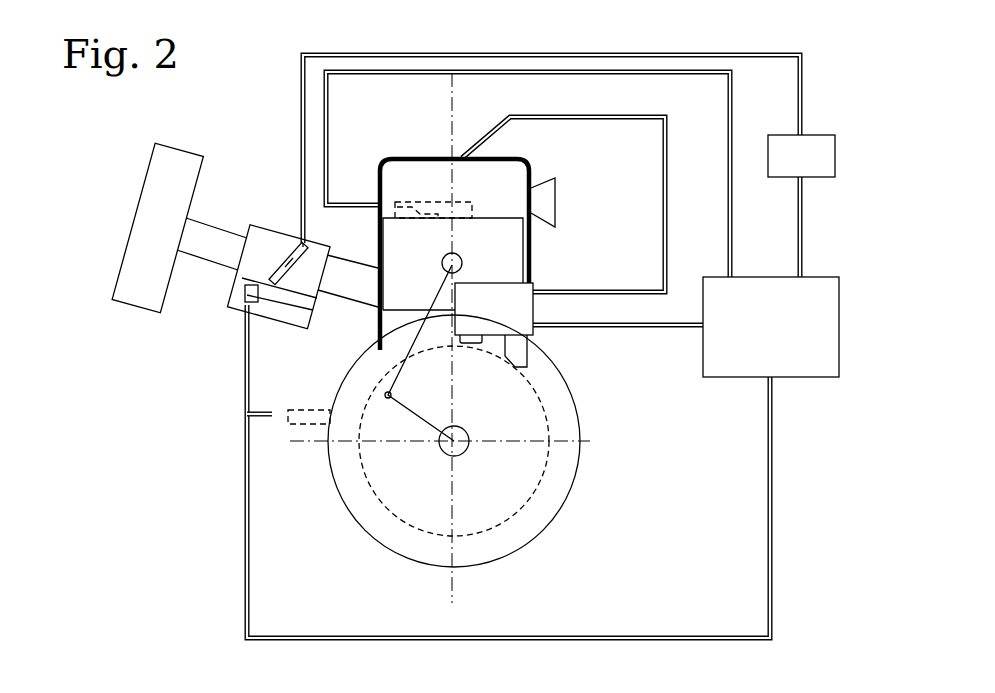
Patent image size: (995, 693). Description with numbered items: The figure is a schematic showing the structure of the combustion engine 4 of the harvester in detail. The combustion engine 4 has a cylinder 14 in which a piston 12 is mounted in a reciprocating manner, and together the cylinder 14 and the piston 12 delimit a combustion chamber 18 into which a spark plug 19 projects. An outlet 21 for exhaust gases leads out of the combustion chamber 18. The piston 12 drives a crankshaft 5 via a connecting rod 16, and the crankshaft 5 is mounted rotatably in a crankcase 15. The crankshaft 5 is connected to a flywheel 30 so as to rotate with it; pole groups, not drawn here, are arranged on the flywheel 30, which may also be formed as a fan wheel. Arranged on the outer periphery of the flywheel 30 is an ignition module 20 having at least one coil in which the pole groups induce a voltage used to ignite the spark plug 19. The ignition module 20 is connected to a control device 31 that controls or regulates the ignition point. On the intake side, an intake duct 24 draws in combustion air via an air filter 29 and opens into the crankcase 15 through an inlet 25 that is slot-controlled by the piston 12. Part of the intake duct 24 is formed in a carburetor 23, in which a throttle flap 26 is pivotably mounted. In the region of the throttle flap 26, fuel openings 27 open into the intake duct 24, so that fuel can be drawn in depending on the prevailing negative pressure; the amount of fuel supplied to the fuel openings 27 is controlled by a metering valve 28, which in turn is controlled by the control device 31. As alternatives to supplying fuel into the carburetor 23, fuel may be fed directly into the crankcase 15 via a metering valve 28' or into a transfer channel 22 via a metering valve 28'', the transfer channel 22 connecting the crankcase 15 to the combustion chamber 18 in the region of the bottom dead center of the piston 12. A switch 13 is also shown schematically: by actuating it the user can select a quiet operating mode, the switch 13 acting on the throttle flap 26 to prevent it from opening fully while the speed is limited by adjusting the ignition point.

The combustion engine 4 is at (263, 128).
The crankshaft 5 is at (463, 450).
The piston 12 is at (505, 250).
The switch 13 is at (810, 164).
The cylinder 14 is at (378, 200).
The crankcase 15 is at (510, 530).
The connecting rod 16 is at (445, 310).
The combustion chamber 18 is at (503, 195).
The spark plug 19 is at (481, 140).
The ignition module 20 is at (520, 309).
The outlet 21 is at (550, 202).
The transfer channel 22 is at (441, 208).
The carburetor 23 is at (262, 228).
The intake duct 24 is at (340, 288).
The inlet 25 is at (372, 287).
The throttle flap 26 is at (283, 262).
The fuel openings 27 is at (248, 278).
The metering valve 28 is at (486, 471).
The metering valve 28' is at (301, 443).
The metering valve 28'' is at (400, 168).
The air filter 29 is at (148, 192).
The flywheel 30 is at (540, 400).
The control device 31 is at (779, 332).